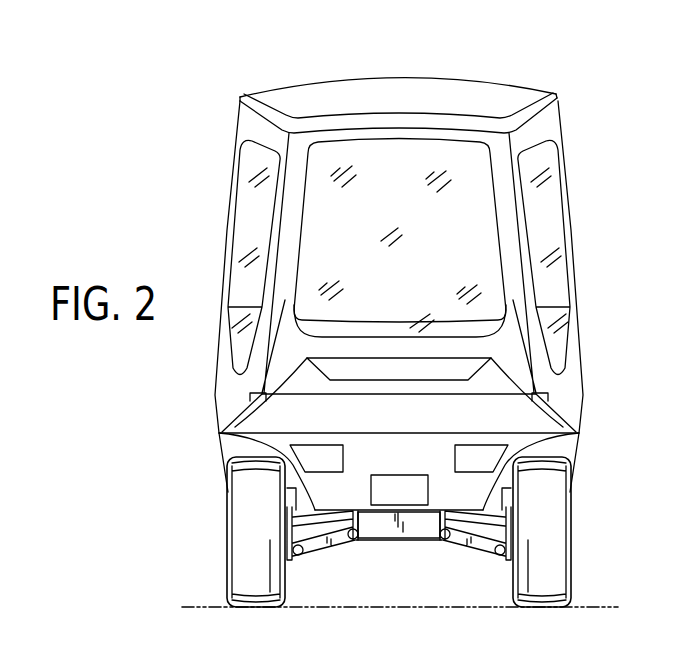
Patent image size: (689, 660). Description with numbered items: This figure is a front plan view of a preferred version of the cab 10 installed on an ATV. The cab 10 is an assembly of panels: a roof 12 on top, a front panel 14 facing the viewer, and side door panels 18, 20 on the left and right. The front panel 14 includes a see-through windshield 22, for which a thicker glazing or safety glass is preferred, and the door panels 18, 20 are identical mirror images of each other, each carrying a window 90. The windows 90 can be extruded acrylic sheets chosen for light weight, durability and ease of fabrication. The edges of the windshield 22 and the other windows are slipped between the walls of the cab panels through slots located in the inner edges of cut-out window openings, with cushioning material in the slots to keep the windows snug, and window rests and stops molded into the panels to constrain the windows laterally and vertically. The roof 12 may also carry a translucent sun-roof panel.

The cab 10 is at (451, 42).
The roof 12 is at (325, 92).
The front panel 14 is at (508, 222).
The side door panel 18 is at (228, 378).
The side door panel 20 is at (573, 382).
The windshield 22 is at (353, 248).
The window 90 is at (243, 227).